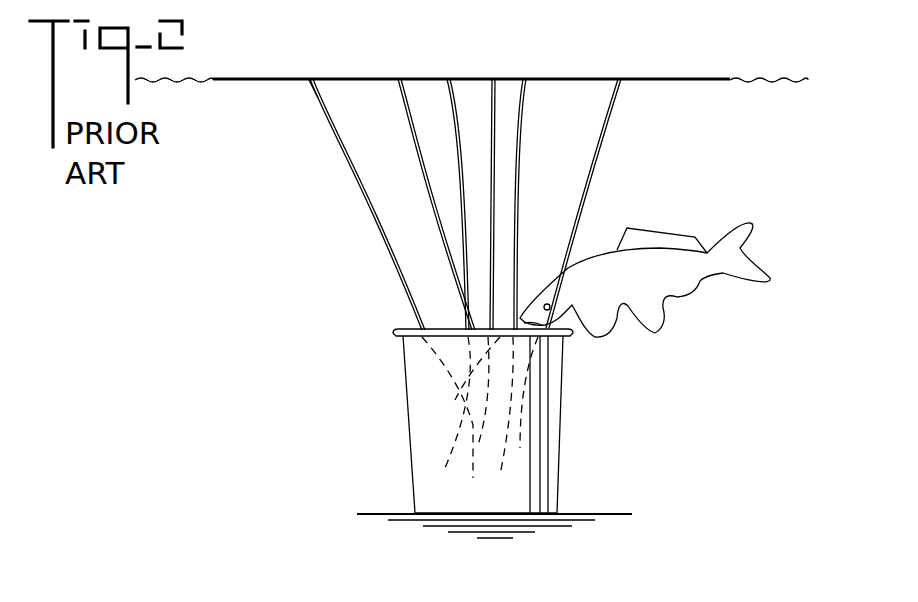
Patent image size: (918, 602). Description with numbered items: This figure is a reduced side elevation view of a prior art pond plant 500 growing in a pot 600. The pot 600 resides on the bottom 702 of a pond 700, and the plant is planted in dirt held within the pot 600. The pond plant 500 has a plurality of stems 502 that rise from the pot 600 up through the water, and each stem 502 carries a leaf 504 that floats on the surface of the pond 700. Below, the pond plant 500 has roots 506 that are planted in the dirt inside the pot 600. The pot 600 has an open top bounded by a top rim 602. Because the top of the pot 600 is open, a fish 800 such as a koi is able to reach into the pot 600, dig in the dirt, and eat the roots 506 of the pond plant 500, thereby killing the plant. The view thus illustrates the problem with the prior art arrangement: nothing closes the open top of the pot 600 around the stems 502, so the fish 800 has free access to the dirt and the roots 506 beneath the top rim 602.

The pond plant 500 is at (564, 54).
The stem 502 is at (372, 205).
The leaf 504 is at (328, 78).
The roots 506 is at (473, 455).
The pot 600 is at (394, 430).
The top rim 602 is at (404, 331).
The pond 700 is at (771, 78).
The bottom 702 is at (442, 528).
The fish 800 is at (662, 263).